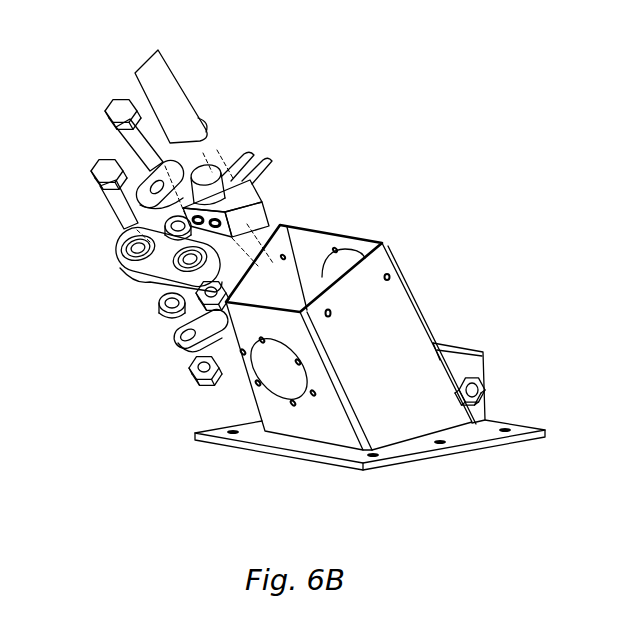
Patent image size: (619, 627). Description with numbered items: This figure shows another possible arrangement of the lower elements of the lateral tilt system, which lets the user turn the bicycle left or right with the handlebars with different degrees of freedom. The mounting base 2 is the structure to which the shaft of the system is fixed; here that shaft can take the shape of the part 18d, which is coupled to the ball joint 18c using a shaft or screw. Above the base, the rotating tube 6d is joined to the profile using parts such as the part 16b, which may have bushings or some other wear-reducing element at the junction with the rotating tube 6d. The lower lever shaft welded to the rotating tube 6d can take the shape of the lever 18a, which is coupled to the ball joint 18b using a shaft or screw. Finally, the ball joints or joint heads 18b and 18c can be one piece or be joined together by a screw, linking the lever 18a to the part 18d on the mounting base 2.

The mounting base 2 is at (416, 296).
The rotating tube 6d is at (184, 75).
The part 16b is at (272, 200).
The lever 18a is at (130, 190).
The ball joint 18b is at (156, 289).
The ball joint 18c is at (117, 267).
The part 18d is at (153, 365).